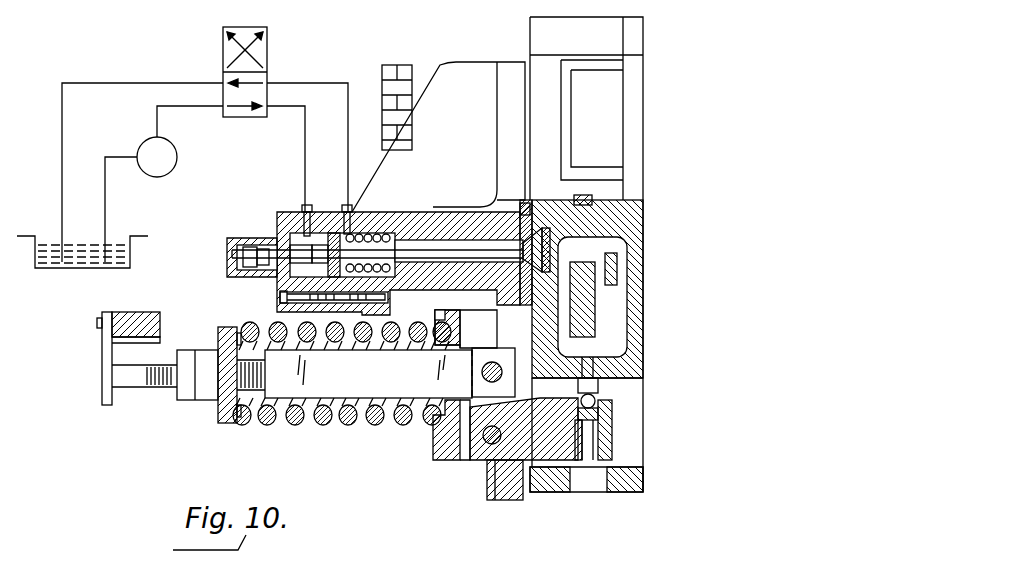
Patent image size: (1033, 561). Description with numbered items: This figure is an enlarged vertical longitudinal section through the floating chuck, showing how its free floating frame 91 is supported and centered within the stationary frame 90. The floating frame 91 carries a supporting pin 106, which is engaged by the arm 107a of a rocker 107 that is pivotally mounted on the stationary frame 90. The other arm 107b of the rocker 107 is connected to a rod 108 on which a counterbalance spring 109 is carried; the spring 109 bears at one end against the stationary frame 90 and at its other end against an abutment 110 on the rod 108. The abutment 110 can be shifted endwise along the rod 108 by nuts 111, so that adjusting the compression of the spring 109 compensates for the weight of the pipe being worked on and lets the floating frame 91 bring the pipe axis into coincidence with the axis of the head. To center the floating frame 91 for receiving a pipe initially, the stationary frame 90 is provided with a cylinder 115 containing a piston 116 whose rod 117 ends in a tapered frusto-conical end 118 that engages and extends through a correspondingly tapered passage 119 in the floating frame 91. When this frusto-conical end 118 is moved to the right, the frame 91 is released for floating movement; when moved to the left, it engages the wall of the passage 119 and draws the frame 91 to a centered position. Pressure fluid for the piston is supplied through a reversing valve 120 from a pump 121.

The stationary frame 90 is at (468, 72).
The floating frame 91 is at (637, 308).
The supporting pin 106 is at (605, 383).
The rocker 107 is at (480, 453).
The arm 107a is at (607, 432).
The arm 107b is at (445, 437).
The rod 108 is at (390, 390).
The counterbalance spring 109 is at (323, 423).
The abutment 110 is at (222, 422).
The nuts 111 is at (180, 403).
The cylinder 115 is at (296, 243).
The piston 116 is at (333, 232).
The piston rod 117 is at (432, 252).
The tapered frusto-conical end 118 is at (545, 236).
The tapered passage 119 is at (548, 270).
The reversing valve 120 is at (268, 44).
The pump 121 is at (176, 166).